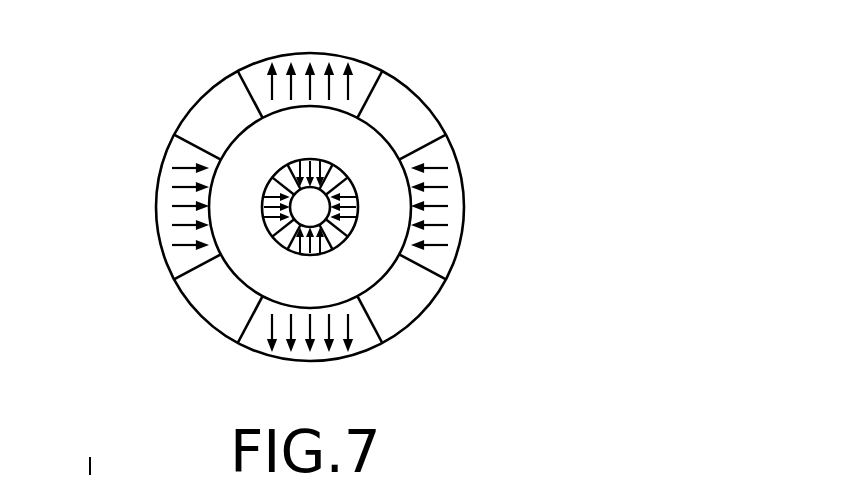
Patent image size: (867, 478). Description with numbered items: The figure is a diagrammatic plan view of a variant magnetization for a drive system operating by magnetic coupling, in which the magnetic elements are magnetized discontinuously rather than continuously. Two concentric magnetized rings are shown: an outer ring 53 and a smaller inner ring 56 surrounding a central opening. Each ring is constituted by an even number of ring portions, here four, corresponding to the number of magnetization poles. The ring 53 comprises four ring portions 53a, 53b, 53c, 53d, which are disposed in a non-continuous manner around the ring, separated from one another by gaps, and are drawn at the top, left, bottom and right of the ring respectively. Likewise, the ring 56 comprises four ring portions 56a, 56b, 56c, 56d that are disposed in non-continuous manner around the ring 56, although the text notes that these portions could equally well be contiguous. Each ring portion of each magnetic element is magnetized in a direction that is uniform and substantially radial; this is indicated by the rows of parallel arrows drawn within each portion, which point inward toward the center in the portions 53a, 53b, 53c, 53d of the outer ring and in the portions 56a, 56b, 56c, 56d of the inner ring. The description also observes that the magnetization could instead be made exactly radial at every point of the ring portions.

The ring 53 is at (478, 151).
The ring portion 53a is at (364, 70).
The ring portion 53b is at (178, 151).
The ring portion 53c is at (256, 344).
The ring portion 53d is at (443, 217).
The ring 56 is at (359, 255).
The ring portion 56a is at (331, 158).
The ring portion 56b is at (262, 188).
The ring portion 56c is at (292, 252).
The ring portion 56d is at (353, 222).